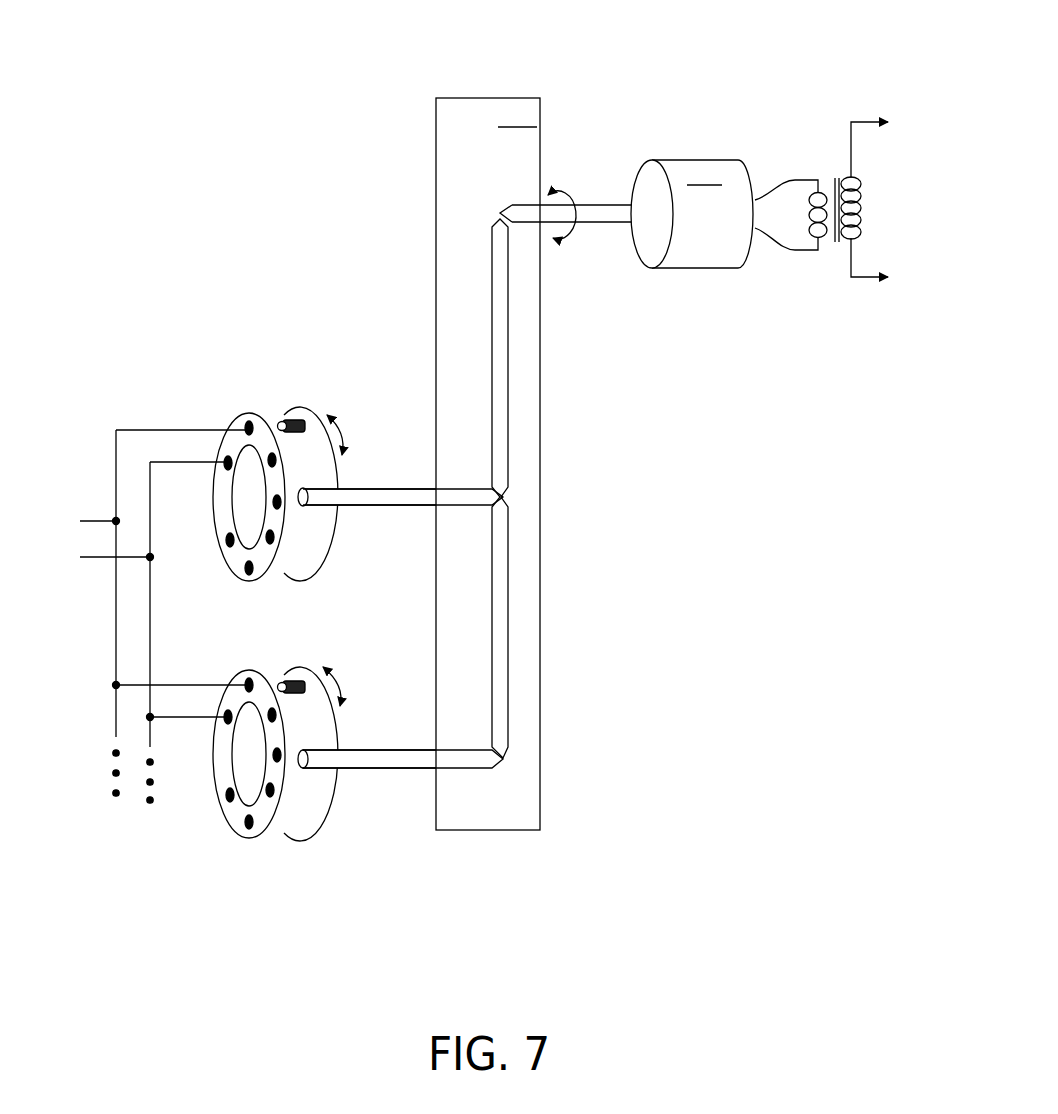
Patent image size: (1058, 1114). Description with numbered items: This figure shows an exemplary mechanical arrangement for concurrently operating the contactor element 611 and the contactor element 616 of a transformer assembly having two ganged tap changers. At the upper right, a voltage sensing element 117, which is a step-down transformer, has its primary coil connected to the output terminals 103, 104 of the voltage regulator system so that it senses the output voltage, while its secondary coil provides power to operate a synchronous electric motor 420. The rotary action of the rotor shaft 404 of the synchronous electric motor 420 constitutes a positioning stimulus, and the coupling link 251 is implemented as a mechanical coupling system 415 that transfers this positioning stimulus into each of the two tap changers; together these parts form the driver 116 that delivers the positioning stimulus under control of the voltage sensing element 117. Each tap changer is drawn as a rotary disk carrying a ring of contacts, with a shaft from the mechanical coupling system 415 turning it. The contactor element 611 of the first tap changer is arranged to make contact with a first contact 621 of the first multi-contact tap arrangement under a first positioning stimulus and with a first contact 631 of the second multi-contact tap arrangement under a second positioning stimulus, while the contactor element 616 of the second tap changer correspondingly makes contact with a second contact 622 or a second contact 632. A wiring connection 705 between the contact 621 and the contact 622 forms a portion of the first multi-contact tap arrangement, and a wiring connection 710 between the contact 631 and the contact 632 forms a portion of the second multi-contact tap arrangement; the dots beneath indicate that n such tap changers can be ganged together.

The driver 116 is at (442, 433).
The mechanical coupling system 415 is at (503, 80).
The coupling link 251 is at (626, 194).
The rotor shaft 404 is at (580, 203).
The synchronous electric motor 420 is at (692, 214).
The output terminal 103 is at (889, 145).
The output terminal 104 is at (889, 263).
The voltage sensing element 117 is at (841, 201).
The contactor element 611 is at (281, 420).
The contactor element 616 is at (281, 681).
The first contact 621 is at (246, 427).
The first contact 631 is at (225, 460).
The second contact 622 is at (246, 683).
The second contact 632 is at (225, 715).
The wiring connection 705 is at (116, 489).
The wiring connection 710 is at (150, 626).